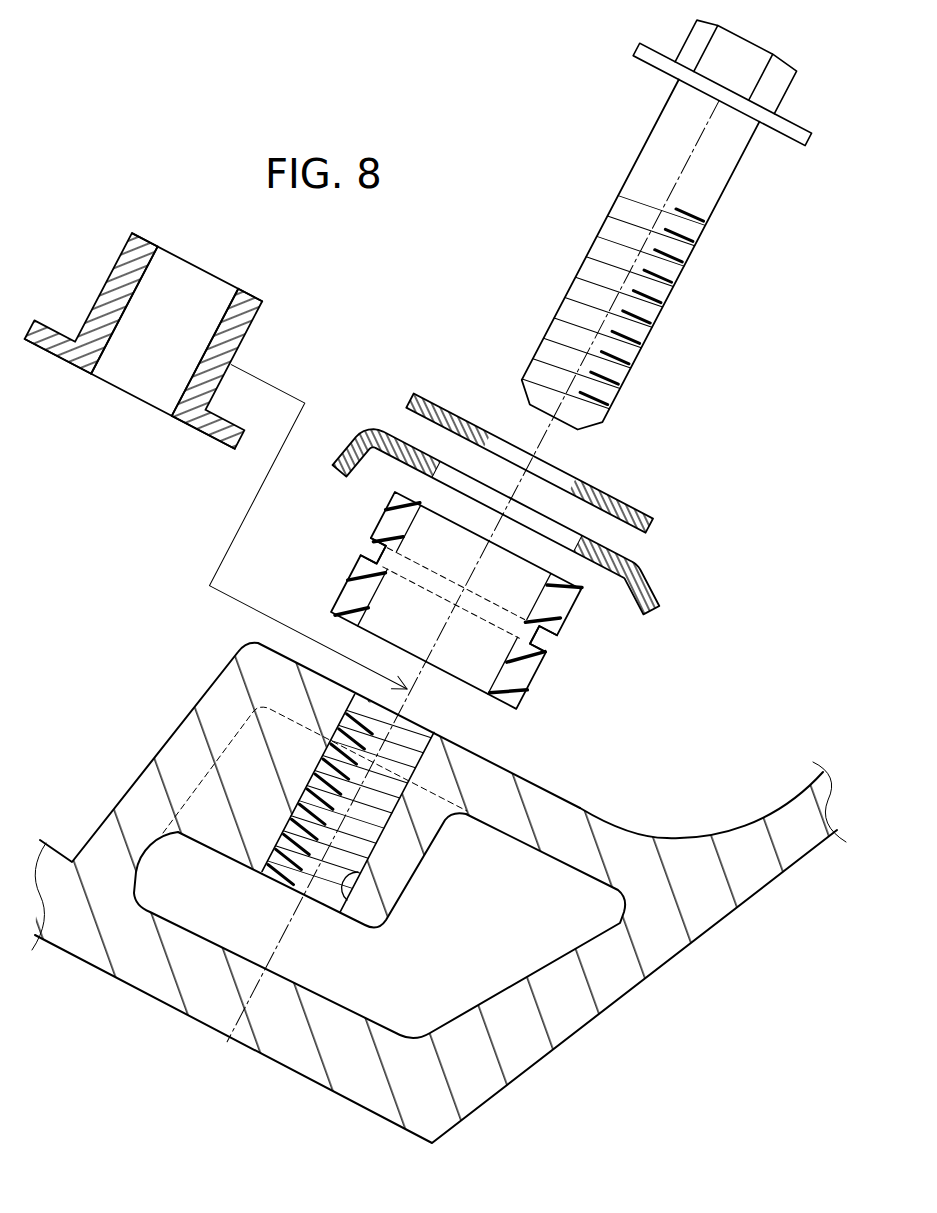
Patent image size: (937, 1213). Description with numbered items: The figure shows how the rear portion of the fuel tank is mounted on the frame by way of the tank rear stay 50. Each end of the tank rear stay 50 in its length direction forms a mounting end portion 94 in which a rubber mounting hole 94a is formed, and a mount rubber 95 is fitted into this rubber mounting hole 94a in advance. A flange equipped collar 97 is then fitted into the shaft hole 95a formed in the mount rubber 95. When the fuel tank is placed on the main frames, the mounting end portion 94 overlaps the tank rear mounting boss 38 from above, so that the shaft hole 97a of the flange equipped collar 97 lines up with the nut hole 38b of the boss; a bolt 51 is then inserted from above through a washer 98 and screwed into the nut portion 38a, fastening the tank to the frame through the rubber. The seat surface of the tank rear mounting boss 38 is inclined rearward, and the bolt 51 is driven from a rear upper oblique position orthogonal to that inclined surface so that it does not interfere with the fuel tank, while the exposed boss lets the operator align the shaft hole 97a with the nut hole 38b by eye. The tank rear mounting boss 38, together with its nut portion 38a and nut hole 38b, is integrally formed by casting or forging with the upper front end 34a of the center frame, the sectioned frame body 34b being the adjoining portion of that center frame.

The bolt 51 is at (650, 170).
The flange equipped collar 97 is at (258, 298).
The shaft hole 97a is at (175, 378).
The washer 98 is at (600, 492).
The mounting end portion 94 is at (630, 552).
The rubber mounting hole 94a is at (445, 477).
The mount rubber 95 is at (522, 678).
The shaft hole 95a is at (537, 600).
The tank rear stay 50 is at (555, 564).
The tank rear mounting boss 38 is at (183, 720).
The nut portion 38a is at (415, 864).
The nut hole 38b is at (398, 922).
The upper front end 34a is at (342, 1075).
The upper frame portion 34b is at (790, 818).